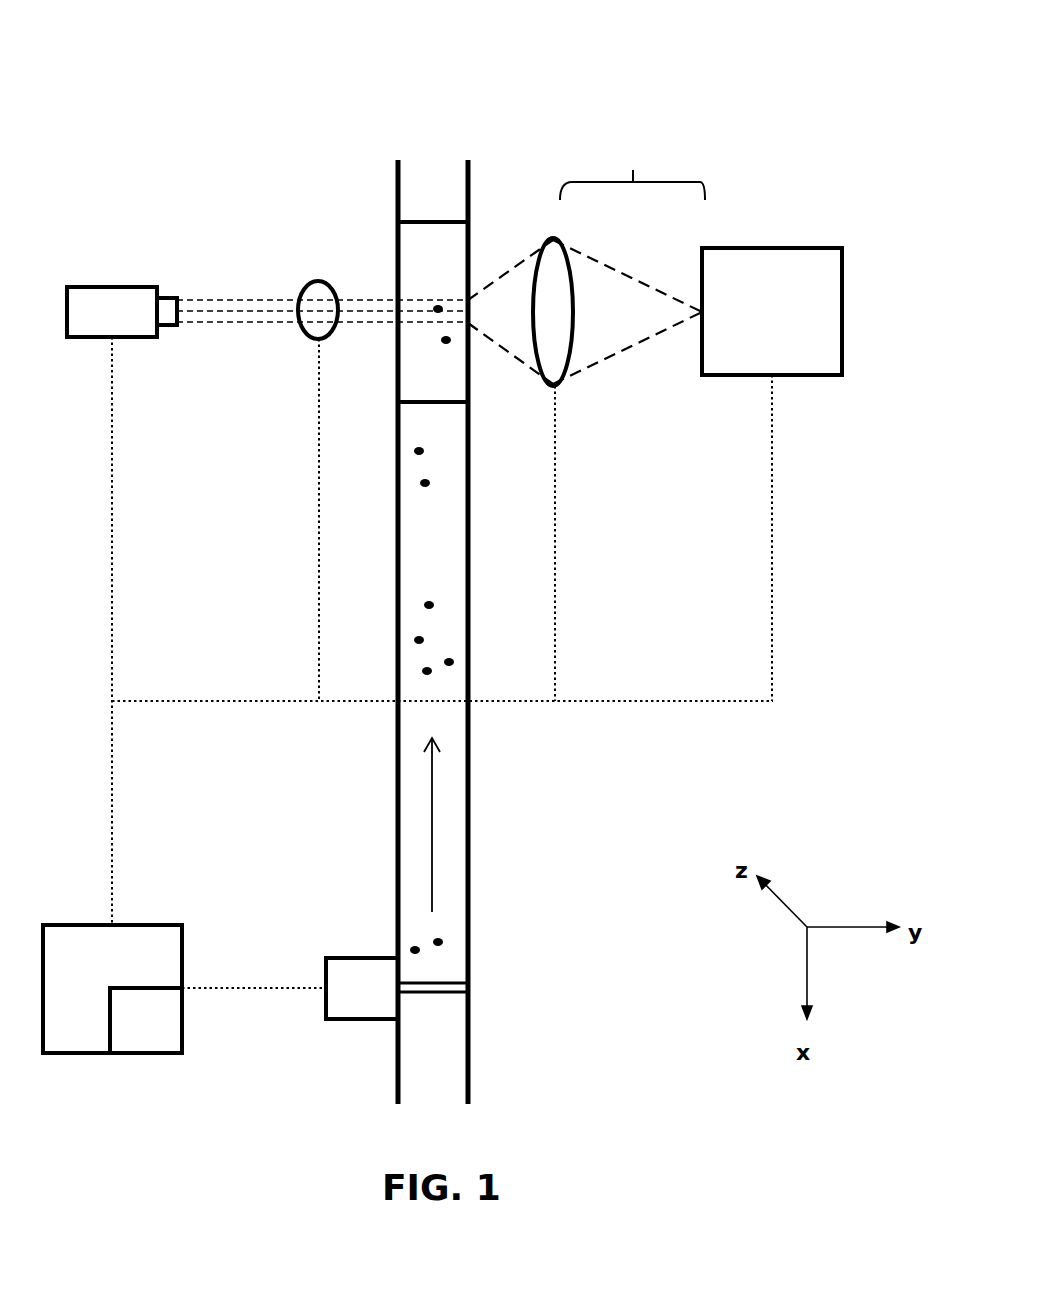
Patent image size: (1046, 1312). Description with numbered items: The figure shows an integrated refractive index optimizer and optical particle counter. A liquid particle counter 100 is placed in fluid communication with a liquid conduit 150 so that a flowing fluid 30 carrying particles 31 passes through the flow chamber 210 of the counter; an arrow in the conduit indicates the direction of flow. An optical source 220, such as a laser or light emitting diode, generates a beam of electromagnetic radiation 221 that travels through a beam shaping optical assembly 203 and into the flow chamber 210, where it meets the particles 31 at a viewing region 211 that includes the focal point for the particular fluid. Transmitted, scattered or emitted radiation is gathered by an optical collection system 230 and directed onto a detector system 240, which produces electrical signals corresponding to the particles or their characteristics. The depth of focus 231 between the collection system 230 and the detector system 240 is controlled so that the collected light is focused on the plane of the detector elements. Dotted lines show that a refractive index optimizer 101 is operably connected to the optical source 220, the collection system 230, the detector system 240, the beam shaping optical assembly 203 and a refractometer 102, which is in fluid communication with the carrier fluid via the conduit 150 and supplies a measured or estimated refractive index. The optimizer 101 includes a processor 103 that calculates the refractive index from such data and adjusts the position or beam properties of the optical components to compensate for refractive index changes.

The liquid particle counter 100 is at (72, 44).
The refractive index optimizer 101 is at (62, 958).
The refractometer 102 is at (355, 975).
The processor 103 is at (155, 1013).
The liquid conduit 150 is at (468, 803).
The flowing fluid 30 is at (432, 885).
The particles 31 is at (438, 305).
The beam shaping optical assembly 203 is at (303, 287).
The flow chamber 210 is at (410, 360).
The viewing region 211 is at (422, 307).
The optical source 220 is at (128, 312).
The beam of electromagnetic radiation 221 is at (238, 309).
The optical collection system 230 is at (553, 386).
The depth of focus 231 is at (586, 261).
The detector system 240 is at (707, 322).